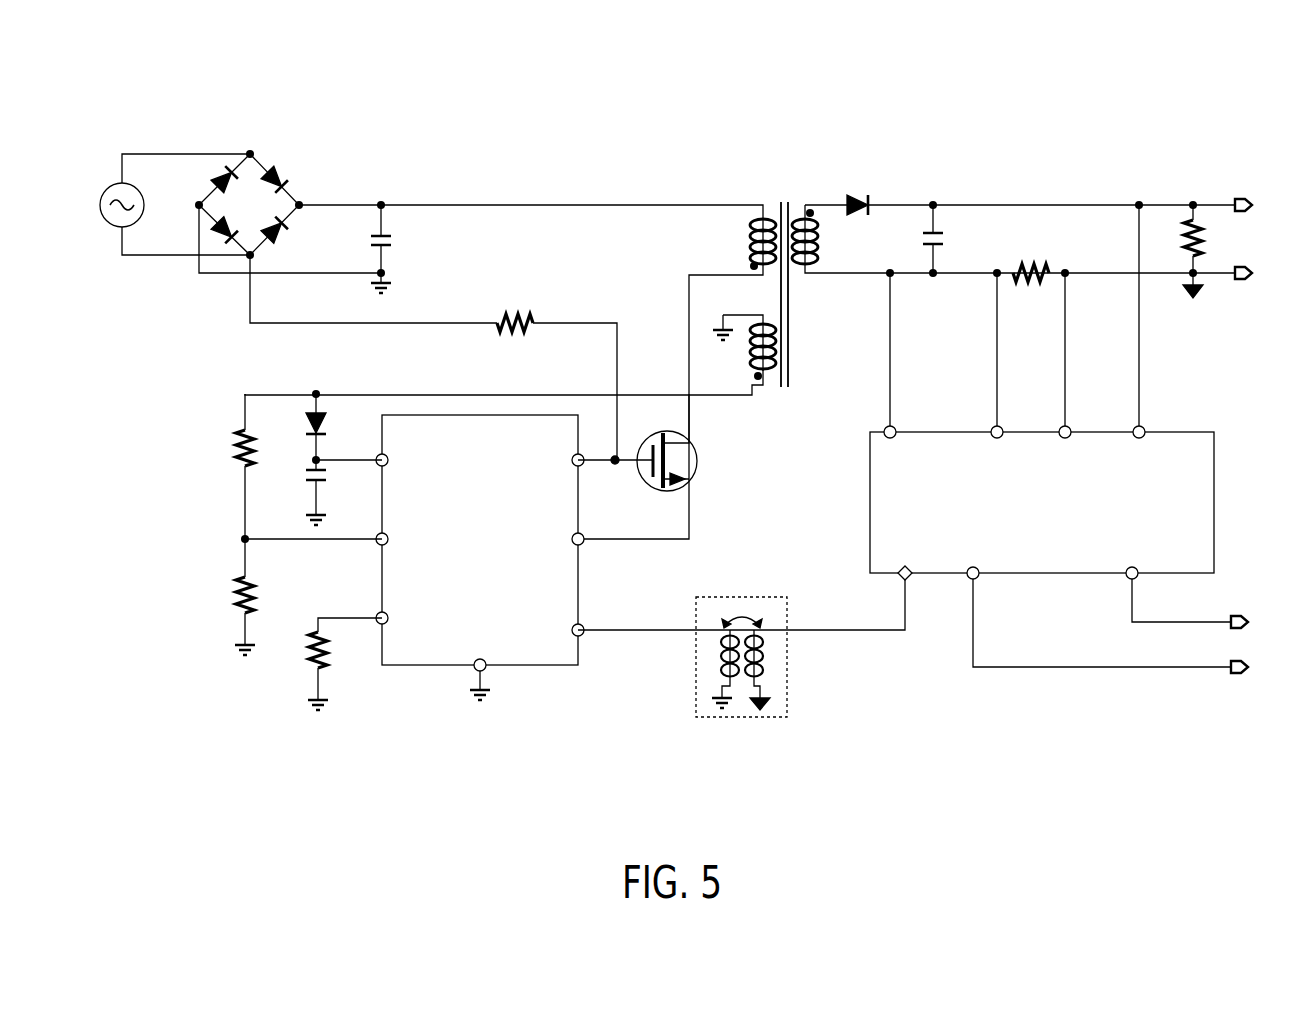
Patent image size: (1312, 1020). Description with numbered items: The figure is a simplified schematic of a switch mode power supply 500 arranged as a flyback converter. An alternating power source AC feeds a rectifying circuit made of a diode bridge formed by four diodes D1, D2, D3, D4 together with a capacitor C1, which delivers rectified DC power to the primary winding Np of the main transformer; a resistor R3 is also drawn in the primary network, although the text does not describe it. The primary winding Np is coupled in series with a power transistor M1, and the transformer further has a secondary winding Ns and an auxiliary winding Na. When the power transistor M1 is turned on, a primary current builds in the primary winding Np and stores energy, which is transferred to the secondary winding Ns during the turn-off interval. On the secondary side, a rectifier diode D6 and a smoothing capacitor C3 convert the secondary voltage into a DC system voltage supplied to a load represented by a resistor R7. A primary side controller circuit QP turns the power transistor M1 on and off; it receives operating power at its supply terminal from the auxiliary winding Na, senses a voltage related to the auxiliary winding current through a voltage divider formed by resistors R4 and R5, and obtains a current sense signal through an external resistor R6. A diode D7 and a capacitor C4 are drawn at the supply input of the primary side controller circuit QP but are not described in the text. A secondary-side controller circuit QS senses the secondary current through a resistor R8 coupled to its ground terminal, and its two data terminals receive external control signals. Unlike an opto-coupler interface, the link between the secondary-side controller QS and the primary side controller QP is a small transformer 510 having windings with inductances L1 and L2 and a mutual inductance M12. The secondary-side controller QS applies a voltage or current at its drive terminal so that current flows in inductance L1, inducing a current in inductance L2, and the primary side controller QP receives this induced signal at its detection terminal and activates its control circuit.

The power supply 500 is at (1163, 74).
The transformer 510 is at (741, 676).
The alternating power source AC is at (103, 205).
The diode D1 is at (285, 175).
The diode D2 is at (283, 231).
The diode D3 is at (215, 230).
The diode D4 is at (218, 171).
The capacitor C1 is at (374, 239).
The resistor R3 is at (515, 316).
The primary winding Np is at (750, 241).
The secondary winding Ns is at (817, 241).
The auxiliary winding Na is at (750, 347).
The diode D6 is at (860, 196).
The smoothing capacitor C3 is at (926, 239).
The resistor R8 is at (1031, 266).
The resistor R7 is at (1205, 238).
The primary side controller circuit QP is at (480, 543).
The resistor R4 is at (234, 448).
The resistor R5 is at (233, 595).
The external resistor R6 is at (303, 650).
The diode D7 is at (329, 423).
The capacitor C4 is at (329, 466).
The power transistor M1 is at (681, 442).
The secondary-side controller circuit QS is at (1042, 503).
The inductance L1 is at (762, 664).
The inductance L2 is at (719, 664).
The mutual inductance M12 is at (742, 614).